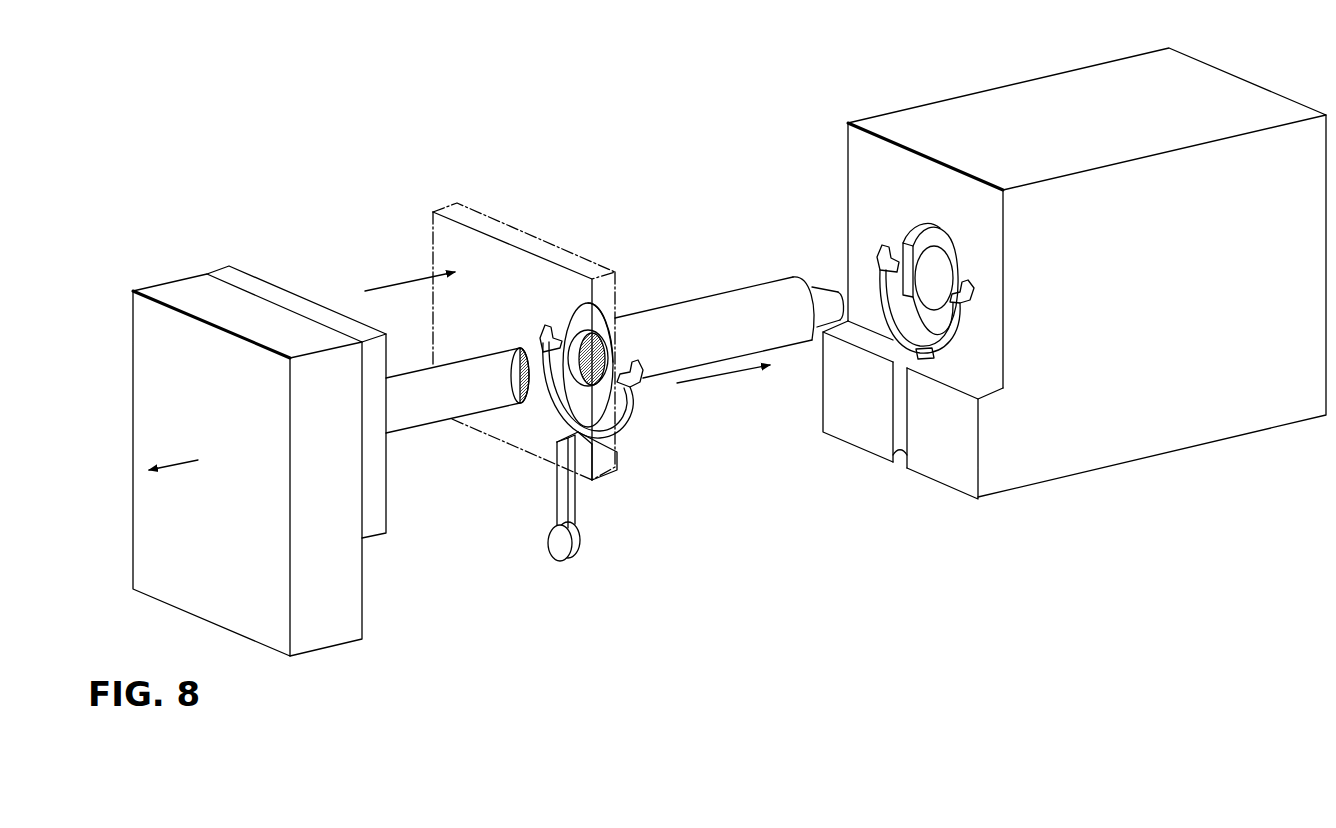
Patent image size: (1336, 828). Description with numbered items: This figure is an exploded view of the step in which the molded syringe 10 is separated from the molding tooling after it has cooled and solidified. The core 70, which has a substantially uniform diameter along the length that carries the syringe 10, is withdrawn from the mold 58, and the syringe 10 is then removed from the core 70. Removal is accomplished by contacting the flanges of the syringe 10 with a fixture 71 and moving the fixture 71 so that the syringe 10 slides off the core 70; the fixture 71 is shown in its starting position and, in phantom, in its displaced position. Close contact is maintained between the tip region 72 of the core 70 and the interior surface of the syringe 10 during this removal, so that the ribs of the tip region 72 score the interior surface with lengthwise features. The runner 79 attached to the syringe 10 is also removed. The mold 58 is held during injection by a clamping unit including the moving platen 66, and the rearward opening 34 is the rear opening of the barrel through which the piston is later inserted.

The syringe 10 is at (697, 284).
The rearward opening 34 is at (903, 456).
The mold 58 is at (883, 112).
The moving platen 66 is at (363, 617).
The core 70 is at (418, 432).
The fixture 71 is at (284, 288).
The tip region 72 is at (510, 346).
The runner 79 is at (582, 535).